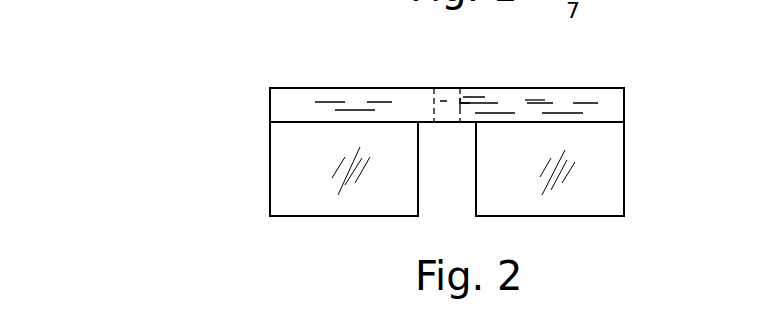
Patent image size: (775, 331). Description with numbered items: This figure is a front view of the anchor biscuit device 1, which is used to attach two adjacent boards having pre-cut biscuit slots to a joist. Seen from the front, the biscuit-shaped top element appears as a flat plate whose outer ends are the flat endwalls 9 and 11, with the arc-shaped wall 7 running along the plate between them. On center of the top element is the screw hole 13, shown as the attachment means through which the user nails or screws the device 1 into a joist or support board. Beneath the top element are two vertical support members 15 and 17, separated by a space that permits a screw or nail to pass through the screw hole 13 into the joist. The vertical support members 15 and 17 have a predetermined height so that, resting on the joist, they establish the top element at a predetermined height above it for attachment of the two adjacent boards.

The anchor biscuit device 1 is at (290, 58).
The wall 7 is at (543, 100).
The flat endwall 9 is at (269, 107).
The flat endwall 11 is at (625, 109).
The screw hole 13 is at (446, 88).
The vertical support member 15 is at (283, 153).
The vertical support member 17 is at (620, 173).